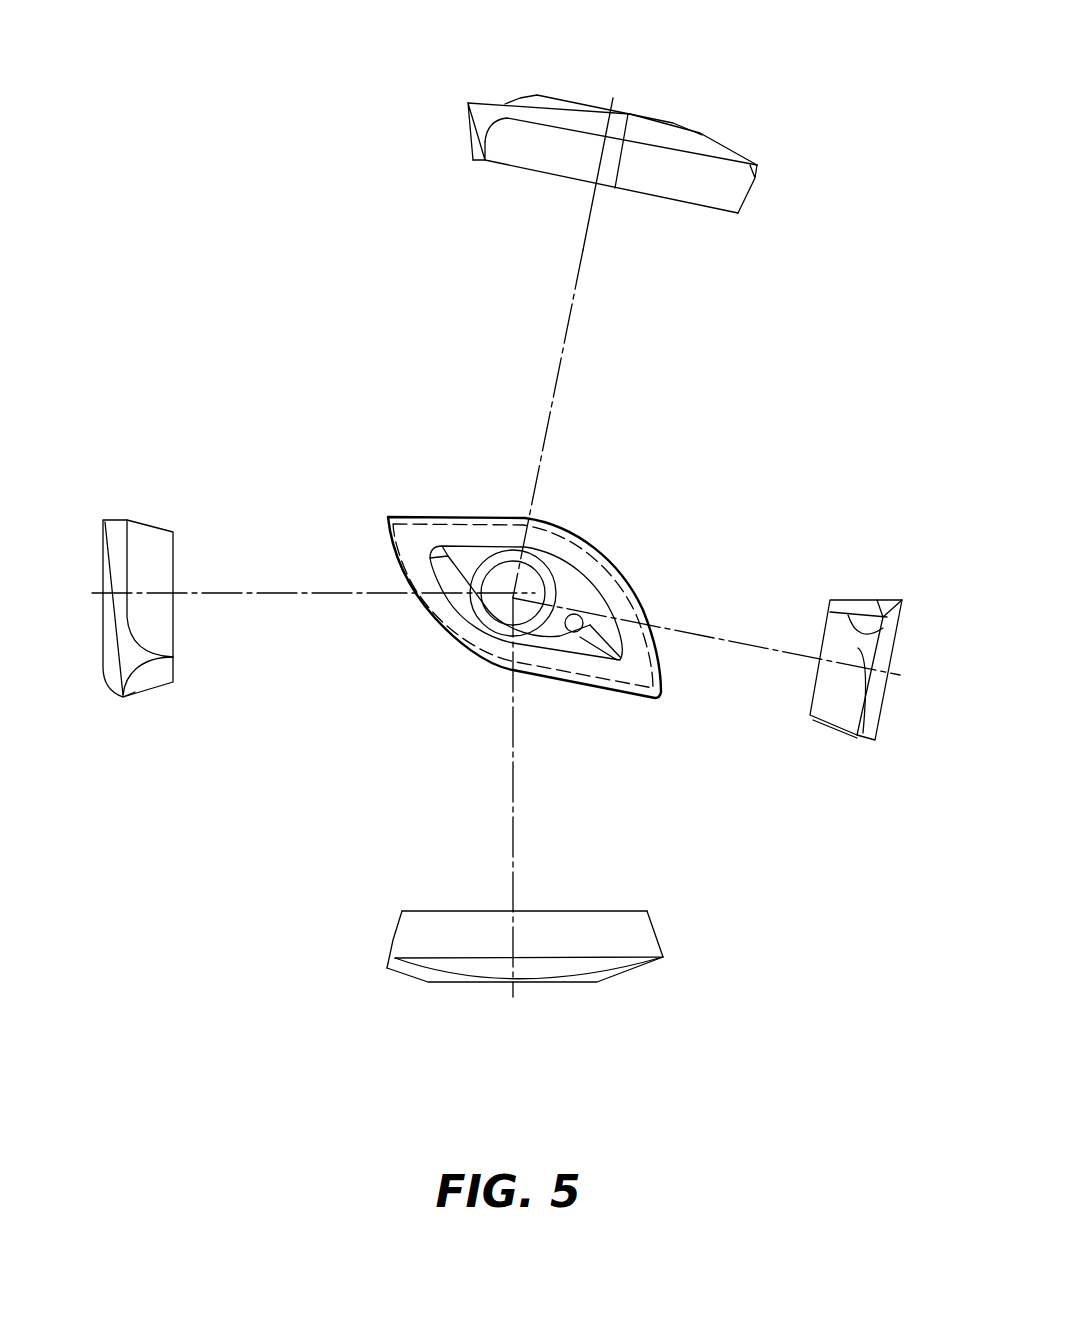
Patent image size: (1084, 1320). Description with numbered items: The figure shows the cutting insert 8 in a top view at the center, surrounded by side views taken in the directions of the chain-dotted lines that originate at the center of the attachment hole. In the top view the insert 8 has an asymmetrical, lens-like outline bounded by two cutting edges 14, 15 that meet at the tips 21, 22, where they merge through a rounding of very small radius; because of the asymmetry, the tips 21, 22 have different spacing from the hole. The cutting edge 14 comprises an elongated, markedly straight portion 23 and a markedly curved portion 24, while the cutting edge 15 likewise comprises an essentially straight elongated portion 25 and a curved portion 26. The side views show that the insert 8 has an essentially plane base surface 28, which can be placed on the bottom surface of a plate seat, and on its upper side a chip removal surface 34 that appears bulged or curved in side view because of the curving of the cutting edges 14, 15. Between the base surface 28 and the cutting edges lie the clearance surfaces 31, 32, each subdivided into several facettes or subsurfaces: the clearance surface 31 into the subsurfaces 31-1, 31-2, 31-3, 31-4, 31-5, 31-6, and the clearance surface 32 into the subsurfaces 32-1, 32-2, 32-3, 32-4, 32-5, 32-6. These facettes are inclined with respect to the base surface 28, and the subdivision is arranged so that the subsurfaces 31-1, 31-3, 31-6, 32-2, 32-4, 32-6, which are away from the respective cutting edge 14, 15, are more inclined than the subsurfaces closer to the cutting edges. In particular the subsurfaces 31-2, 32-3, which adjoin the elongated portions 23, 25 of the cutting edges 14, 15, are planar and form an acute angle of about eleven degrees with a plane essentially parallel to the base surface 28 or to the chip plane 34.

The insert 8 is at (567, 497).
The cutting edge 14 is at (590, 548).
The cutting edge 15 is at (647, 118).
The tip 21 is at (663, 698).
The tip 22 is at (380, 517).
The elongated portion 23 is at (450, 515).
The curved portion 24 is at (645, 608).
The elongated portion 25 is at (548, 680).
The curved portion 26 is at (415, 603).
The base surface 28 is at (665, 205).
The clearance surface 31 is at (443, 938).
The subsurface 31-1 is at (855, 605).
The subsurface 31-2 is at (893, 602).
The subsurface 31-3 is at (160, 607).
The subsurface 31-4 is at (115, 535).
The subsurface 31-5 is at (125, 697).
The subsurface 31-6 is at (157, 675).
The clearance surface 32 is at (608, 162).
The subsurface 32-1 is at (557, 118).
The subsurface 32-2 is at (535, 152).
The subsurface 32-3 is at (685, 147).
The subsurface 32-4 is at (718, 192).
The subsurface 32-5 is at (885, 625).
The subsurface 32-6 is at (475, 147).
The chip removal surface 34 is at (693, 85).